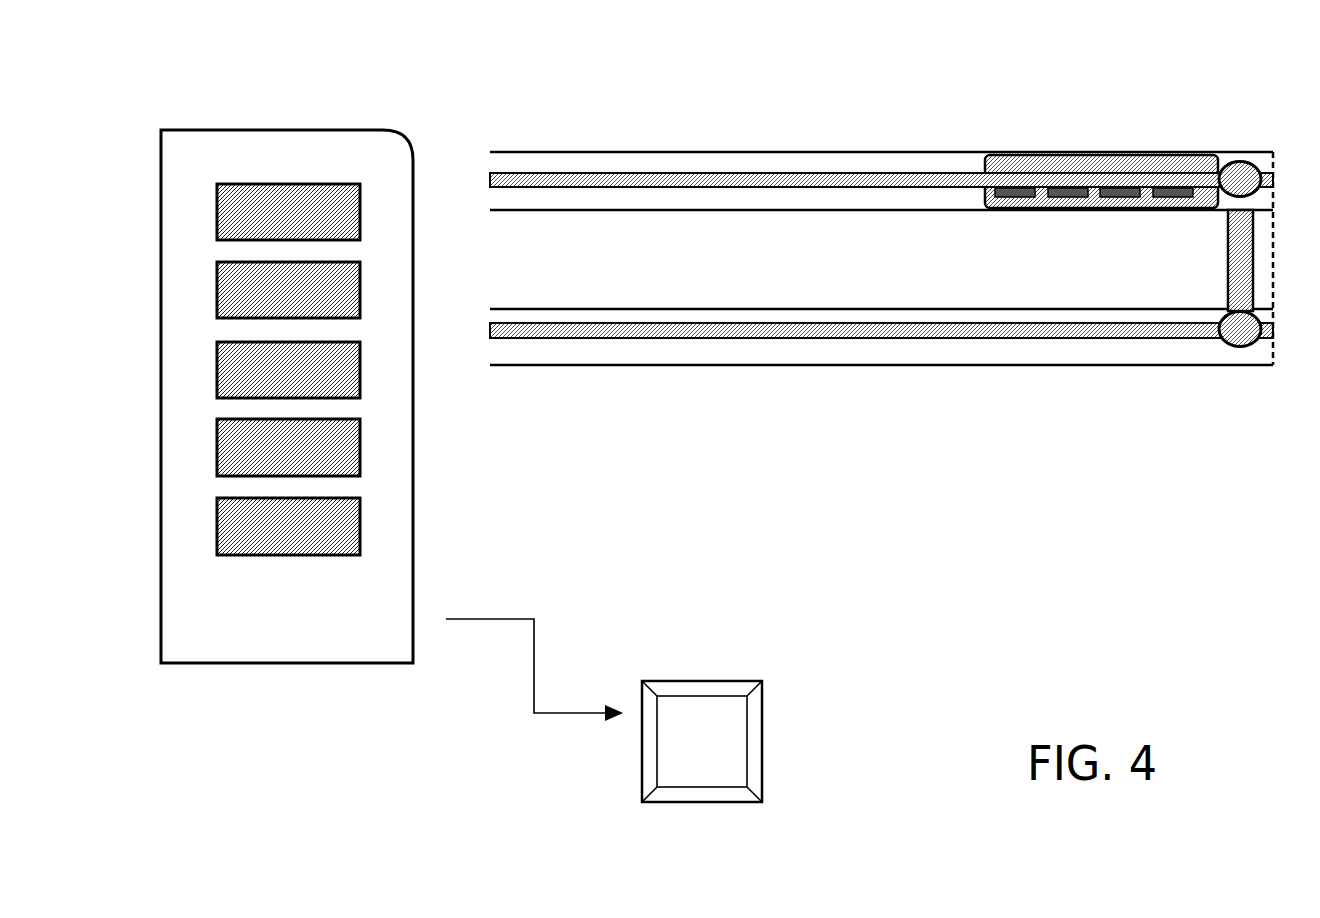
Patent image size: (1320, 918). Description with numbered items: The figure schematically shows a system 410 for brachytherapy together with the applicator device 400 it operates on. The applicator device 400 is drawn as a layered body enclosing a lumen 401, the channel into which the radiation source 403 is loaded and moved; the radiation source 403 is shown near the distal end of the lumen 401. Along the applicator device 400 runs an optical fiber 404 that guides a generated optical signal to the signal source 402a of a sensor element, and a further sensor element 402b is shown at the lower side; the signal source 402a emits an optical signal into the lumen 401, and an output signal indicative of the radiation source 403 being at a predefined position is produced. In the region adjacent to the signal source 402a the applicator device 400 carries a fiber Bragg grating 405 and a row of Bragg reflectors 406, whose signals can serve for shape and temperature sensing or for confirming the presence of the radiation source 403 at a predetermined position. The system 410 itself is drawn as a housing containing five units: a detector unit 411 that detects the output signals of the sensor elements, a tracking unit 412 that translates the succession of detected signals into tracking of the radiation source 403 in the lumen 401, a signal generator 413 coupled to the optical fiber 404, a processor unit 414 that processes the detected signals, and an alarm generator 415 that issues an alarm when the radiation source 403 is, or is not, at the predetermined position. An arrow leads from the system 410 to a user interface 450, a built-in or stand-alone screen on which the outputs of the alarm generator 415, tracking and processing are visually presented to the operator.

The applicator device 400 is at (576, 116).
The lumen 401 is at (841, 243).
The signal source 402a is at (1232, 162).
The sensor element 402b is at (1233, 347).
The radiation source 403 is at (1251, 347).
The optical fiber 404 is at (735, 178).
The fiber Bragg grating 405 is at (1106, 153).
The Bragg reflector 406 is at (1005, 190).
The system 410 is at (285, 129).
The detector unit 411 is at (217, 212).
The tracking unit 412 is at (217, 290).
The signal generator 413 is at (217, 367).
The processor unit 414 is at (217, 443).
The alarm generator 415 is at (217, 520).
The user interface 450 is at (764, 713).